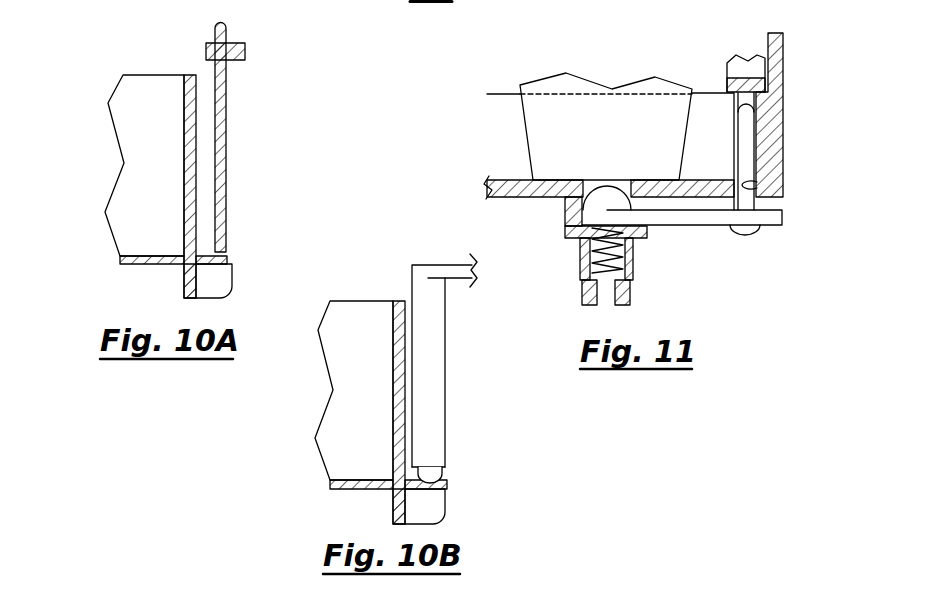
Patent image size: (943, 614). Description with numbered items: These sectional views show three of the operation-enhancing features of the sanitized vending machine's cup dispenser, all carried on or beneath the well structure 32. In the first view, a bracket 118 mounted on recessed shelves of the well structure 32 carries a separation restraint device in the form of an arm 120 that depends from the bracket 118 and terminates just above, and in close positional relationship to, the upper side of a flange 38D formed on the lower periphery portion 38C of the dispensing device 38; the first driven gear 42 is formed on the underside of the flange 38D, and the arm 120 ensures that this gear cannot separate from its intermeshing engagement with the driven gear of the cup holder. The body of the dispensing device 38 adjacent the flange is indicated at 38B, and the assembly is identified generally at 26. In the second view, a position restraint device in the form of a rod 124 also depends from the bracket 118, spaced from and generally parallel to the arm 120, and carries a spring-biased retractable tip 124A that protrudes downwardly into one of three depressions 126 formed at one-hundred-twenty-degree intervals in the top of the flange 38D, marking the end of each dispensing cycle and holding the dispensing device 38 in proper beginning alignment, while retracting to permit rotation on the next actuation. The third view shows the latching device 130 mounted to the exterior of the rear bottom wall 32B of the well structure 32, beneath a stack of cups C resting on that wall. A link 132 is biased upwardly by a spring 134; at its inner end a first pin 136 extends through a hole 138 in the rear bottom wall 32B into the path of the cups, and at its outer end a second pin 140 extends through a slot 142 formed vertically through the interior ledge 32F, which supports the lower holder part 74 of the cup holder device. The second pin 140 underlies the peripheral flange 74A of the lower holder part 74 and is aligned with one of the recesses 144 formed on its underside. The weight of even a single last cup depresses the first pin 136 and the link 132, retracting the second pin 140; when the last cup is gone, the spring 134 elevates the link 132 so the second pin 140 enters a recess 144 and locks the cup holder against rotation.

In FIG. 10A, the bracket assembly 26 is at (119, 148).
In FIG. 10B, the bracket assembly 26 is at (327, 362).
In FIG. 10A, the dispensing device 38 is at (196, 162).
In FIG. 10B, the dispensing device 38 is at (405, 357).
In FIG. 10A, the bracket body portion 38B is at (147, 213).
In FIG. 10B, the bracket body portion 38B is at (363, 450).
In FIG. 10A, the lower periphery portion 38C is at (188, 284).
In FIG. 10B, the lower periphery portion 38C is at (397, 506).
In FIG. 10A, the flange 38D is at (226, 259).
In FIG. 10B, the flange 38D is at (437, 483).
In FIG. 10A, the first driven gear 42 is at (212, 280).
In FIG. 10B, the first driven gear 42 is at (468, 523).
In FIG. 10A, the bracket 118 is at (243, 50).
In FIG. 10B, the bracket 118 is at (446, 265).
In FIG. 10A, the arm 120 is at (226, 116).
In FIG. 10B, the rod 124 is at (476, 355).
In FIG. 10B, the retractable tip 124A is at (428, 472).
In FIG. 10B, the depressions 126 is at (437, 491).
In FIG. 11, the container C is at (548, 90).
In FIG. 11, the well structure 32 is at (780, 123).
In FIG. 11, the rear bottom wall 32B is at (492, 188).
In FIG. 11, the interior ledge 32F is at (769, 88).
In FIG. 11, the lower holder part 74 is at (710, 46).
In FIG. 11, the peripheral flange 74A is at (752, 90).
In FIG. 11, the recesses 144 is at (745, 88).
In FIG. 11, the second pin 140 is at (747, 150).
In FIG. 11, the slot 142 is at (760, 184).
In FIG. 11, the first pin 136 is at (579, 174).
In FIG. 11, the hole 138 is at (628, 174).
In FIG. 11, the link 132 is at (700, 225).
In FIG. 11, the spring 134 is at (594, 252).
In FIG. 11, the latching device 130 is at (633, 152).